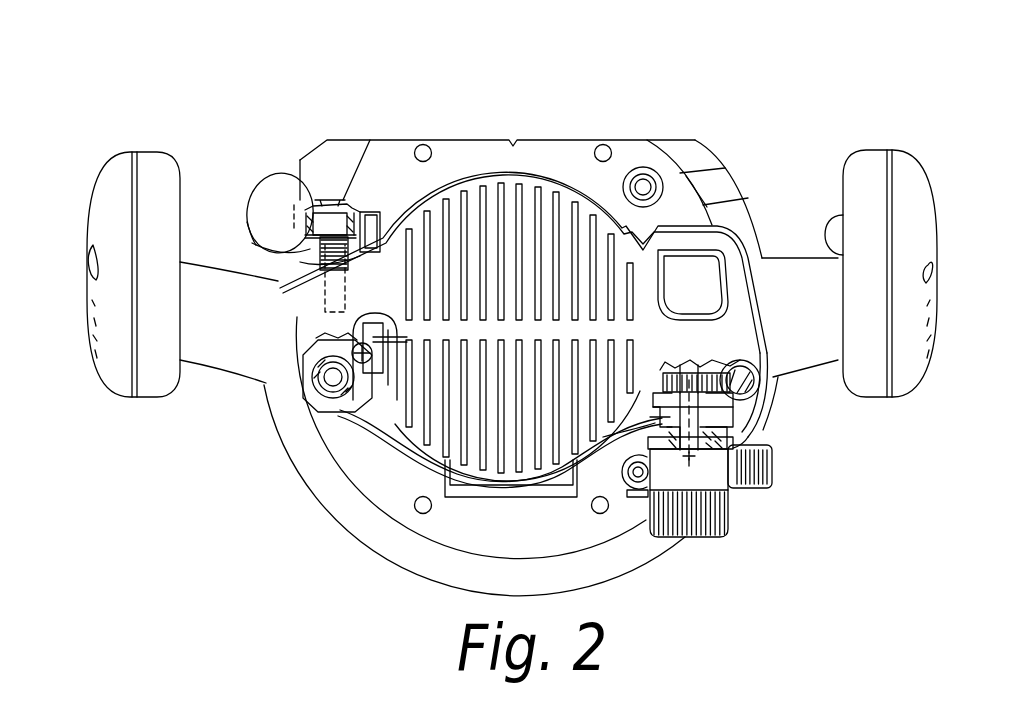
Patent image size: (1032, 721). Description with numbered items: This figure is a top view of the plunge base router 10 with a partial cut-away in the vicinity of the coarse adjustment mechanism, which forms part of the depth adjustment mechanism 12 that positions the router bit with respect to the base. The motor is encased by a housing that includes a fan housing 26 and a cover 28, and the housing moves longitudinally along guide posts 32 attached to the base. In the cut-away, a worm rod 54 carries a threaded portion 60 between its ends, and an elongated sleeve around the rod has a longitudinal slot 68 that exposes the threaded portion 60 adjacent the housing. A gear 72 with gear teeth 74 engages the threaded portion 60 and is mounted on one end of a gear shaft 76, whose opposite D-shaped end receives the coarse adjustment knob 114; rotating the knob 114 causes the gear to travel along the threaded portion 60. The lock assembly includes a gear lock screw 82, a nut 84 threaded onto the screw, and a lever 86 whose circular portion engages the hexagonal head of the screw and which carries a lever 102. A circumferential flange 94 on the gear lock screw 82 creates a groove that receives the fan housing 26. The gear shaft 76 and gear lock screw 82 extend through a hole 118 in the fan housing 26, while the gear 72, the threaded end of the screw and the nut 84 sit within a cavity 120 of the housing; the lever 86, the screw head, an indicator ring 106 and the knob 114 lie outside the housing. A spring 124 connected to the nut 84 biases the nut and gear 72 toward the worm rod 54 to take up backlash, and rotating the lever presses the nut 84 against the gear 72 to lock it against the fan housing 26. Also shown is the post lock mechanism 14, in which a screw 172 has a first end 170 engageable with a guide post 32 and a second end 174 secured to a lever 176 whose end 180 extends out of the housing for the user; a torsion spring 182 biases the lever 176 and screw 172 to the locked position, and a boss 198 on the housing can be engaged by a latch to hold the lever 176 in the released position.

The plunge base router 10 is at (300, 570).
The depth adjustment mechanism 12 is at (790, 490).
The post lock mechanism 14 is at (254, 108).
The fan housing 26 is at (663, 363).
The cover 28 is at (628, 278).
The guide posts 32 is at (322, 396).
The worm rod 54 is at (780, 373).
The threaded portion 60 is at (760, 388).
The longitudinal slot 68 is at (757, 367).
The gear 72 is at (700, 372).
The gear teeth 74 is at (688, 367).
The gear shaft 76 is at (687, 442).
The gear lock screw 82 is at (630, 497).
The nut 84 is at (660, 397).
The lever 86 is at (745, 435).
The circumferential flange 94 is at (765, 418).
The lever 102 is at (775, 470).
The indicator ring 106 is at (700, 478).
The coarse adjustment knob 114 is at (724, 532).
The hole 118 is at (616, 465).
The cavity 120 is at (770, 408).
The spring 124 is at (602, 440).
The first end 170 is at (345, 214).
The screw 172 is at (315, 300).
The second end 174 is at (350, 264).
The lever 176 is at (281, 172).
The end 180 is at (258, 199).
The torsion spring 182 is at (372, 215).
The boss 198 is at (382, 216).